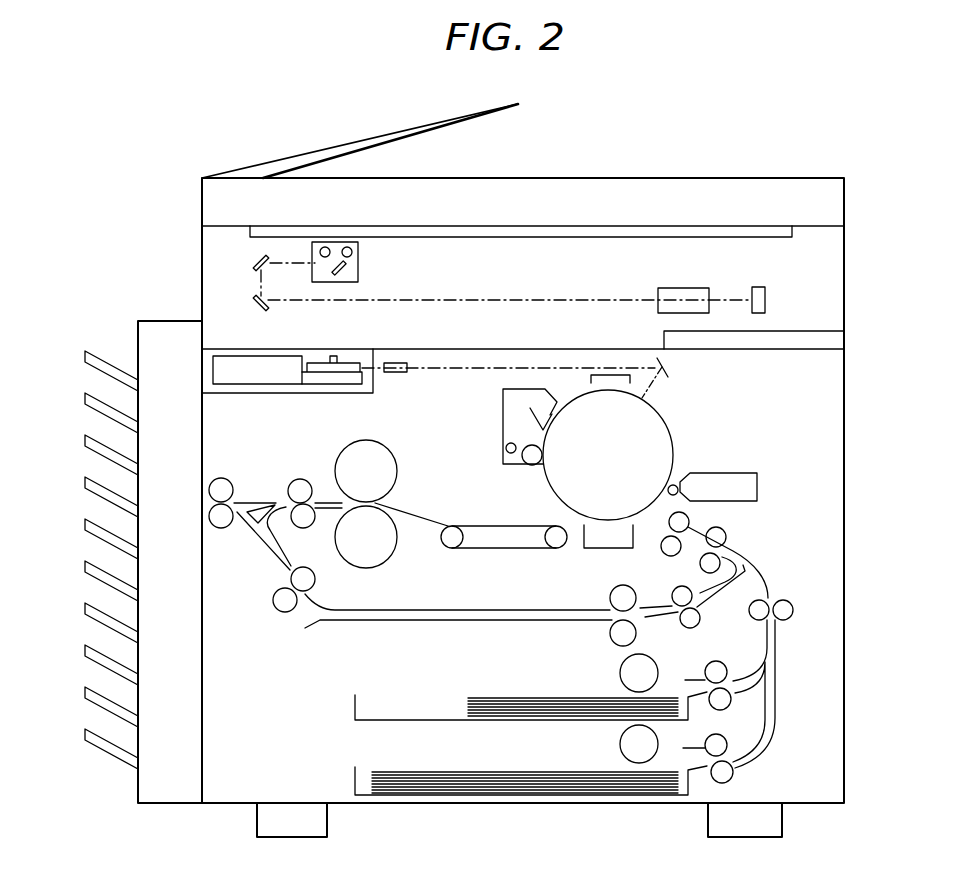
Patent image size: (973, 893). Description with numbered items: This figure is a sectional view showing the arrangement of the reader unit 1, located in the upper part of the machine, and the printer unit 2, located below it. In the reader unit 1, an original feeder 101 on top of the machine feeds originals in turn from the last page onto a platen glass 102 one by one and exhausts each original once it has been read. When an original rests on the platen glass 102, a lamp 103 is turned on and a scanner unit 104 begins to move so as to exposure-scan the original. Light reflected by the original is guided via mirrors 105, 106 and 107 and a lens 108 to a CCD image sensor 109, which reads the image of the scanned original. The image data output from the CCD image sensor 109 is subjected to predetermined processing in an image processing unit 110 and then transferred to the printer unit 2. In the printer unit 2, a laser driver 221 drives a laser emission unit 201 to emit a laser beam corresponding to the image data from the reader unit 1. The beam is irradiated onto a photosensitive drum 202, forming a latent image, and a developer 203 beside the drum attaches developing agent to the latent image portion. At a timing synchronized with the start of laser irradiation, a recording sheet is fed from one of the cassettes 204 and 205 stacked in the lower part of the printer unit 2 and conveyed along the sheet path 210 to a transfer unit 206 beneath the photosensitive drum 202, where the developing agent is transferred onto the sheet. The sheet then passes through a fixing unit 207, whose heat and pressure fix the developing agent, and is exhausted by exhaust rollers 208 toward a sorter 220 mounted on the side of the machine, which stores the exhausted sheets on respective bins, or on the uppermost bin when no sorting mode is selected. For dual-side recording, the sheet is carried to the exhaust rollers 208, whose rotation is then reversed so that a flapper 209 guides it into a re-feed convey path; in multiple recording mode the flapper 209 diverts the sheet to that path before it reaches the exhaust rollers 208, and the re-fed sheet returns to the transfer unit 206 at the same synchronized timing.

The reader unit 1 is at (915, 350).
The printer unit 2 is at (915, 808).
The original feeder 101 is at (310, 150).
The platen glass 102 is at (592, 232).
The lamp 103 is at (353, 253).
The scanner unit 104 is at (359, 276).
The mirror 105 is at (347, 270).
The mirror 106 is at (250, 262).
The mirror 107 is at (255, 302).
The lens 108 is at (682, 296).
The CCD image sensor 109 is at (760, 289).
The image processing unit 110 is at (840, 341).
The laser emission unit 201 is at (328, 362).
The photosensitive drum 202 is at (583, 410).
The developer 203 is at (735, 483).
The cassette 204 is at (697, 720).
The cassette 205 is at (710, 795).
The transfer unit 206 is at (600, 549).
The fixing unit 207 is at (385, 452).
The exhaust rollers 208 is at (228, 518).
The flapper 209 is at (247, 517).
The sheet conveying path 210 is at (511, 620).
The sorter 220 is at (148, 784).
The laser driver 221 is at (212, 372).